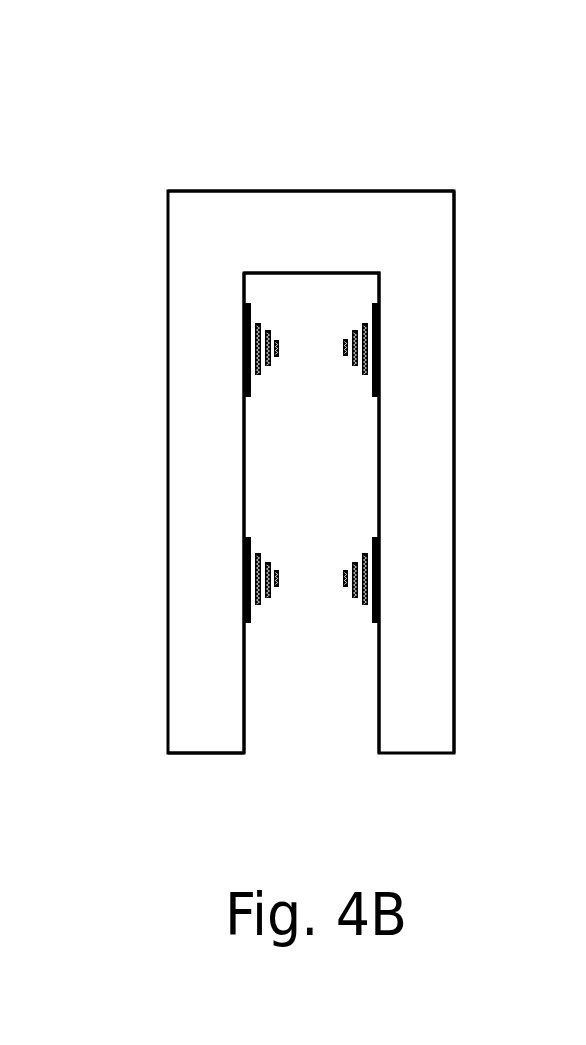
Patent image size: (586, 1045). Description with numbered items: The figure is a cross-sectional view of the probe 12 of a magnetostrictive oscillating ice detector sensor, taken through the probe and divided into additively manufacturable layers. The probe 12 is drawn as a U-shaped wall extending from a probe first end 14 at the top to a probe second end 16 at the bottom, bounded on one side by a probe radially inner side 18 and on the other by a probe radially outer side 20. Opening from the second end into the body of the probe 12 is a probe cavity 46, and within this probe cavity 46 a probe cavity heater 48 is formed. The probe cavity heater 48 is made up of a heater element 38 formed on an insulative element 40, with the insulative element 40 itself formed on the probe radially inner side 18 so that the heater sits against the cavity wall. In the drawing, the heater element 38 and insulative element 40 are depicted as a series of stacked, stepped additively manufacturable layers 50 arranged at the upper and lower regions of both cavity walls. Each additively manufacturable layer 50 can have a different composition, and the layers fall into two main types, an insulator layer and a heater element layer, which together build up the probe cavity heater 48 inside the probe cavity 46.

The probe 12 is at (205, 247).
The probe first end 14 is at (168, 210).
The probe second end 16 is at (168, 750).
The probe radially inner side 18 is at (252, 492).
The probe radially outer side 20 is at (458, 376).
The heater element 38 is at (244, 362).
The insulative element 40 is at (253, 334).
The probe cavity 46 is at (330, 448).
The probe cavity heater 48 is at (523, 74).
The additively manufacturable layers 50 is at (277, 588).